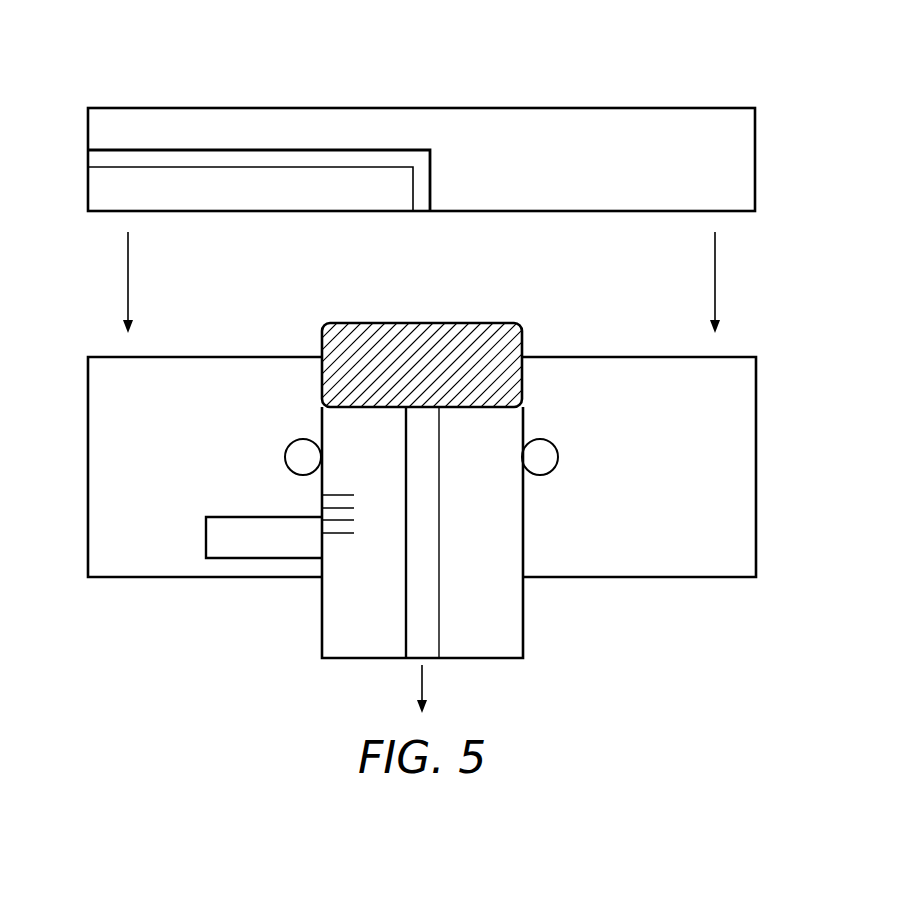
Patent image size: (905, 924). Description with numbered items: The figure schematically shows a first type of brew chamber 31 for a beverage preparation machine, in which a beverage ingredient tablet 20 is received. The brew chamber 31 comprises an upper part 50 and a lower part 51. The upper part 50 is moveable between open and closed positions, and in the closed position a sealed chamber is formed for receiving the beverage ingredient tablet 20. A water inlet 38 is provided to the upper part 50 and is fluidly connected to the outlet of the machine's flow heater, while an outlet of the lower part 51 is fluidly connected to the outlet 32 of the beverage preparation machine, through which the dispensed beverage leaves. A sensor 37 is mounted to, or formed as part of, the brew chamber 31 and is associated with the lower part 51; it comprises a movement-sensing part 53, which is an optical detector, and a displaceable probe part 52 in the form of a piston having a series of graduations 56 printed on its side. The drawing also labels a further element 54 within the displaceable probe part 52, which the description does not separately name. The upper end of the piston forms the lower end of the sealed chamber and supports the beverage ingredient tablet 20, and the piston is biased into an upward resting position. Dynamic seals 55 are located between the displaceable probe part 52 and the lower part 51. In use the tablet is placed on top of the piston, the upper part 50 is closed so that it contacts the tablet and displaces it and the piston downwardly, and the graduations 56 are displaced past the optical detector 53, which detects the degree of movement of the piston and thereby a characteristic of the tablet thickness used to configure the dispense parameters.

The beverage ingredient tablet 20 is at (418, 335).
The brew chamber 31 is at (422, 122).
The outlet 32 is at (420, 690).
The sensor 37 is at (451, 495).
The water inlet 38 is at (70, 158).
The upper part 50 is at (747, 120).
The lower part 51 is at (745, 372).
The displaceable probe part 52 is at (513, 642).
The movement-sensing part 53 is at (210, 528).
The channel 54 is at (410, 612).
The dynamic seals 55 is at (549, 457).
The graduations 56 is at (345, 492).